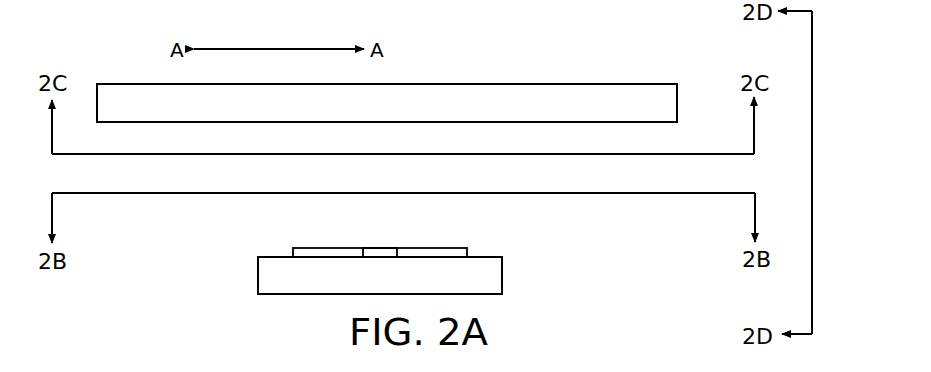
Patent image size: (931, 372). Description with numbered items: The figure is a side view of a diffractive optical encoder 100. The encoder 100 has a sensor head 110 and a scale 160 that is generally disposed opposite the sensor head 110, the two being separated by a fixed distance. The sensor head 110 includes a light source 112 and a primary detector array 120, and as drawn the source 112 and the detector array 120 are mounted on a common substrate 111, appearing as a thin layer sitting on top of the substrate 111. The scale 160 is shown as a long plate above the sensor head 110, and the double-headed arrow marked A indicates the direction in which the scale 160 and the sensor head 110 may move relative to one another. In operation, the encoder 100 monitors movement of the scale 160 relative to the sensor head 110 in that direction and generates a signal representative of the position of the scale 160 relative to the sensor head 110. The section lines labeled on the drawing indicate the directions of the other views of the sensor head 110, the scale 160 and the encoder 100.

The encoder 100 is at (624, 326).
The sensor head 110 is at (247, 252).
The common substrate 111 is at (503, 278).
The light source 112 is at (378, 247).
The primary detector array 120 is at (335, 247).
The scale 160 is at (609, 75).